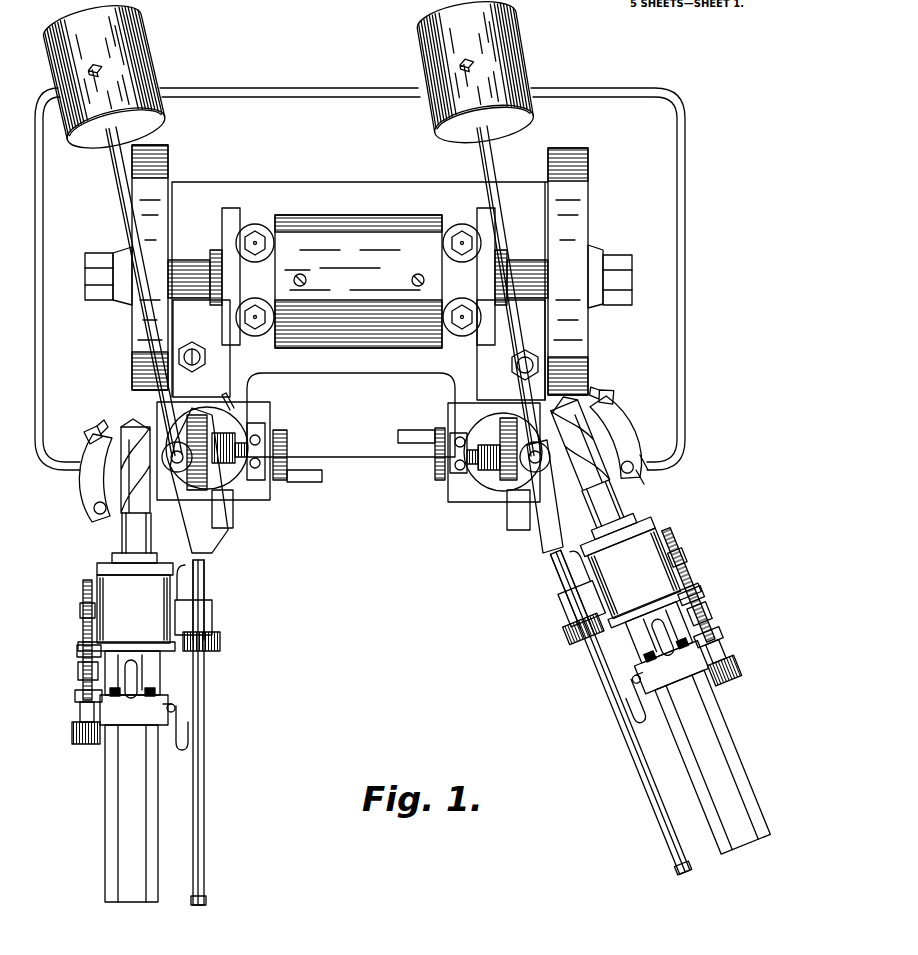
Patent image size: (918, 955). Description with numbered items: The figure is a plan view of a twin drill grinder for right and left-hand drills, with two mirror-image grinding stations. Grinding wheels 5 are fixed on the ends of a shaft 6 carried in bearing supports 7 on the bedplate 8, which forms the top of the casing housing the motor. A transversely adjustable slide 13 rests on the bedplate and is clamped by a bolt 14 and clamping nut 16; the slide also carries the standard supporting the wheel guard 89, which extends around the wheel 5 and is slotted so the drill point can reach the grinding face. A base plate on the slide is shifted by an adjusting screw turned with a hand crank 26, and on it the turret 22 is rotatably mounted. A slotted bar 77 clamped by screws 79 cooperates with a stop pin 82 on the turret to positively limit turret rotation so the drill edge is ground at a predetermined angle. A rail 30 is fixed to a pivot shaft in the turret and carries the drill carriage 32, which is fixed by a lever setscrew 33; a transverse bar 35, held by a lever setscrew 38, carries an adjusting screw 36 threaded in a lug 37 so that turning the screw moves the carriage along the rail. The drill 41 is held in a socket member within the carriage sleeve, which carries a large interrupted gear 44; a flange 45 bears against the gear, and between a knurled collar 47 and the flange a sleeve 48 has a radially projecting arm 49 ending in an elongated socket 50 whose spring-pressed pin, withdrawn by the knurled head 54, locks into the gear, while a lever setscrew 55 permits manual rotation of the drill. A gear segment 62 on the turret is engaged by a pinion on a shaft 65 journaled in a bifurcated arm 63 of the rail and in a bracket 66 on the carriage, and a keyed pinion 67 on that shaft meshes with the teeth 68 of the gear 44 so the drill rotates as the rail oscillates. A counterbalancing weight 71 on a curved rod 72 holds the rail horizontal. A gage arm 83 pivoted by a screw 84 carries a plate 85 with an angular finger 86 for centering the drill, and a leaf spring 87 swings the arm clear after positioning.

The grinding wheel 5 is at (130, 418).
The shaft 6 is at (185, 270).
The bearing support 7 is at (358, 277).
The bedplate 8 is at (647, 357).
The transversely adjustable slide 13 is at (205, 382).
The bolt 14 is at (192, 345).
The clamping nut 16 is at (212, 358).
The turret 22 is at (255, 478).
The hand crank 26 is at (288, 445).
The rail 30 is at (123, 828).
The drill carriage 32 is at (389, 557).
The lever setscrew 33 is at (204, 585).
The transverse bar 35 is at (115, 735).
The adjusting screw 36 is at (78, 736).
The lug 37 is at (80, 610).
The lever setscrew 38 is at (190, 730).
The drill 41 is at (128, 487).
The interrupted gear 44 is at (83, 637).
The flange 45 is at (163, 652).
The knurled collar 47 is at (178, 707).
The sleeve 48 is at (121, 705).
The radially projecting arm 49 is at (80, 650).
The elongated socket 50 is at (80, 672).
The knurled head 54 is at (80, 698).
The lever setscrew 55 is at (137, 685).
The gear segment 62 is at (233, 520).
The arm 63 is at (212, 545).
The shaft 65 is at (204, 770).
The bracket 66 is at (213, 625).
The pinion 67 is at (220, 642).
The teeth 68 is at (172, 648).
The counterbalancing weight 71 is at (288, 78).
The curved rod 72 is at (140, 335).
The bar 77 is at (262, 438).
The screws 79 is at (458, 480).
The stop pin 82 is at (235, 405).
The arm 83 is at (92, 470).
The screw 84 is at (640, 473).
The plate 85 is at (86, 436).
The finger 86 is at (99, 422).
The leaf spring 87 is at (648, 447).
The wheel guard 89 is at (140, 205).